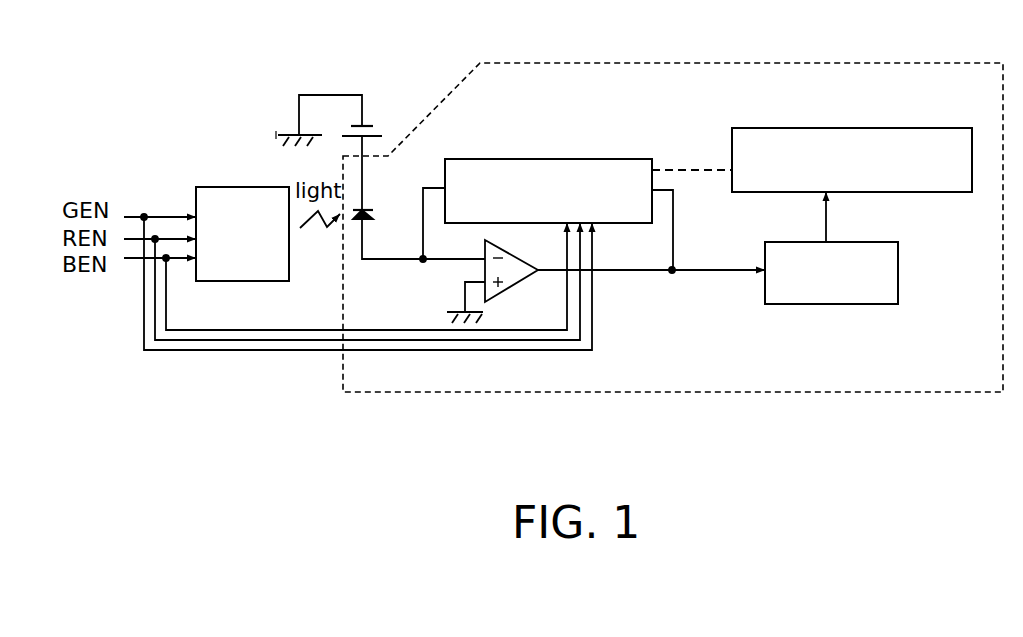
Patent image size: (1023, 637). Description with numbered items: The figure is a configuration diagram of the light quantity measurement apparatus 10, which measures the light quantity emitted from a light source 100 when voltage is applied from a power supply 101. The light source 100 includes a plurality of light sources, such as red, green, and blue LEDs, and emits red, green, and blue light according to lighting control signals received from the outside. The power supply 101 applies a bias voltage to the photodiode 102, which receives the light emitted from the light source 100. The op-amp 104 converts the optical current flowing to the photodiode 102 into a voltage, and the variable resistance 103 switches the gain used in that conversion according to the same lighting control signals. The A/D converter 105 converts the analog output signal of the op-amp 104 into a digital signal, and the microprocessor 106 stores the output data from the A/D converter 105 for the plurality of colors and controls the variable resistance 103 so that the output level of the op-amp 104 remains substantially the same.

The light quantity measurement apparatus 10 is at (777, 62).
The light source 100 is at (210, 186).
The power supply 101 is at (385, 122).
The photodiode 102 is at (383, 198).
The variable resistance 103 is at (530, 157).
The op-amp 104 is at (522, 283).
The A/D converter 105 is at (900, 288).
The microprocessor 106 is at (828, 127).